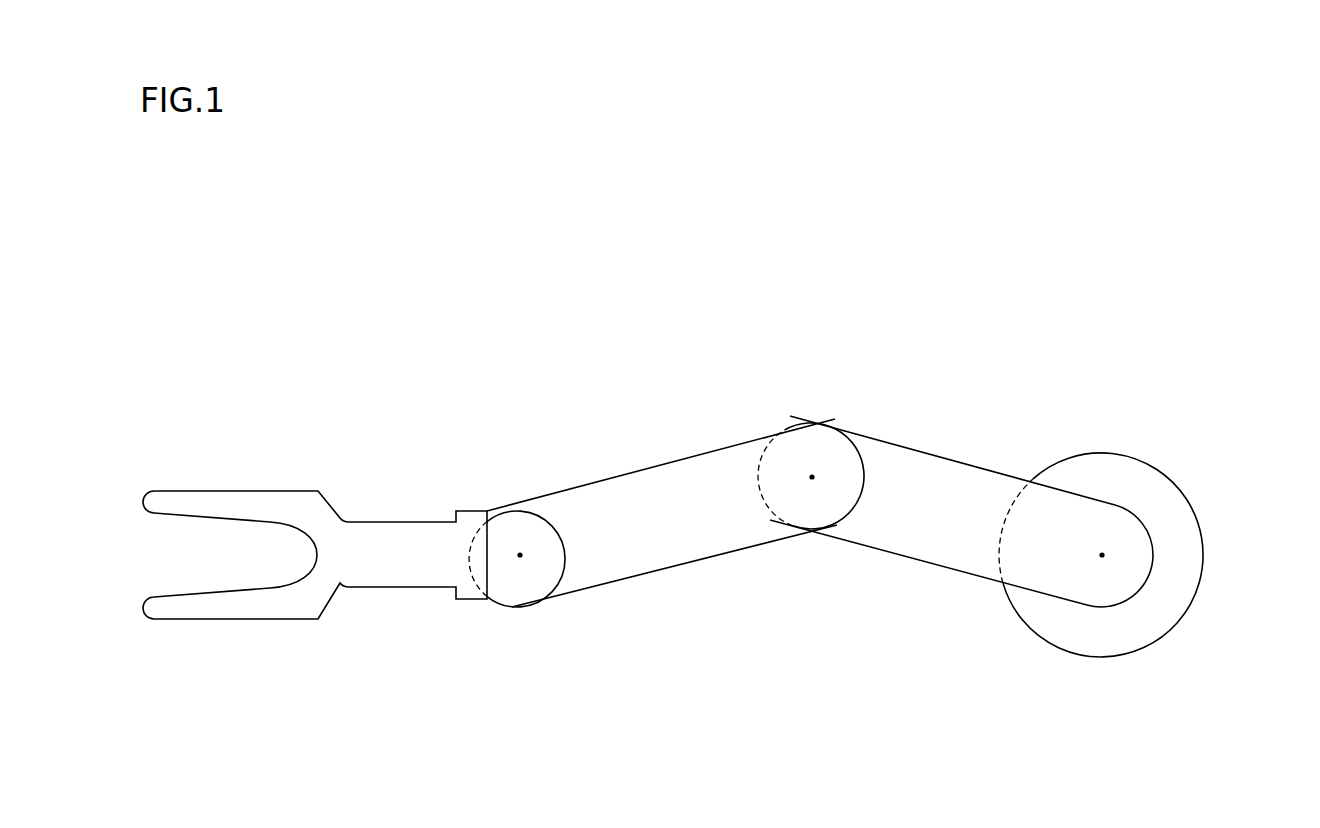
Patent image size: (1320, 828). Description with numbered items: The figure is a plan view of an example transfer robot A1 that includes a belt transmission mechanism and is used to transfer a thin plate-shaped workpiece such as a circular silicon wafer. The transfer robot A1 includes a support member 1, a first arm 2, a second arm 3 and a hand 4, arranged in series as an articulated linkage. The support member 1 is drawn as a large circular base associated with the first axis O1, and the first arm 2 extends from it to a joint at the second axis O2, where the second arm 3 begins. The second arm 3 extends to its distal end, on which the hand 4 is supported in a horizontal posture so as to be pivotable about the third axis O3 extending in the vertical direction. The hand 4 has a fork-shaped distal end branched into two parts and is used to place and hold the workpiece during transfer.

The transfer robot A1 is at (282, 408).
The support member 1 is at (1153, 462).
The first arm 2 is at (957, 458).
The second arm 3 is at (639, 465).
The hand 4 is at (385, 522).
The first axis O1 is at (1102, 555).
The second axis O2 is at (812, 477).
The third axis O3 is at (520, 555).